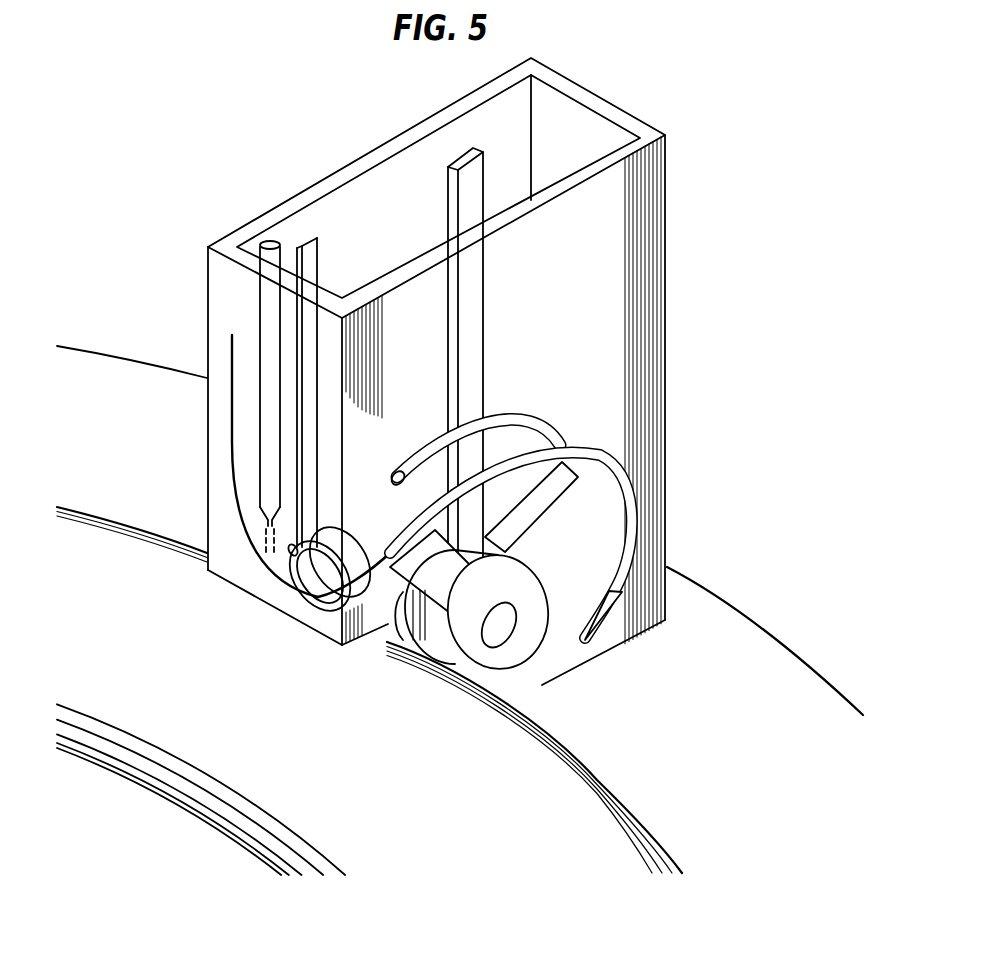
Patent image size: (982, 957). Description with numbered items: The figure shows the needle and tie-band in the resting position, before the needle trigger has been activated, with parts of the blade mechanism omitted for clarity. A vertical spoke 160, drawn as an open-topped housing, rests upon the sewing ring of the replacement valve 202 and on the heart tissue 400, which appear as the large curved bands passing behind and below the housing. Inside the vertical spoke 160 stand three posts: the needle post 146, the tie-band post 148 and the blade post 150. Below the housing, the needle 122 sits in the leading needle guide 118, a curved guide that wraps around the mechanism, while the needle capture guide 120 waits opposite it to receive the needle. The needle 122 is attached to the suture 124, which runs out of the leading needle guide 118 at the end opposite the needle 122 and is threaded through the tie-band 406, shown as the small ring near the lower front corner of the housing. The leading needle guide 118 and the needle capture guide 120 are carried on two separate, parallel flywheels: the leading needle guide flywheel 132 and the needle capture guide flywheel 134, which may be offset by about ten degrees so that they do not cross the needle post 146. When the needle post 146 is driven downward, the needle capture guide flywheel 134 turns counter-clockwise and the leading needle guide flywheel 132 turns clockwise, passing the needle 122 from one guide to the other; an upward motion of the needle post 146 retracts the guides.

The leading needle guide 118 is at (620, 478).
The needle capture guide 120 is at (530, 423).
The needle 122 is at (605, 622).
The suture 124 is at (232, 430).
The leading needle guide flywheel 132 is at (507, 664).
The needle capture guide flywheel 134 is at (395, 618).
The needle post 146 is at (449, 213).
The tie-band post 148 is at (318, 251).
The blade post 150 is at (259, 300).
The vertical spoke 160 is at (652, 210).
The replacement valve 202 is at (464, 819).
The heart tissue 400 is at (732, 761).
The tie-band 406 is at (310, 611).